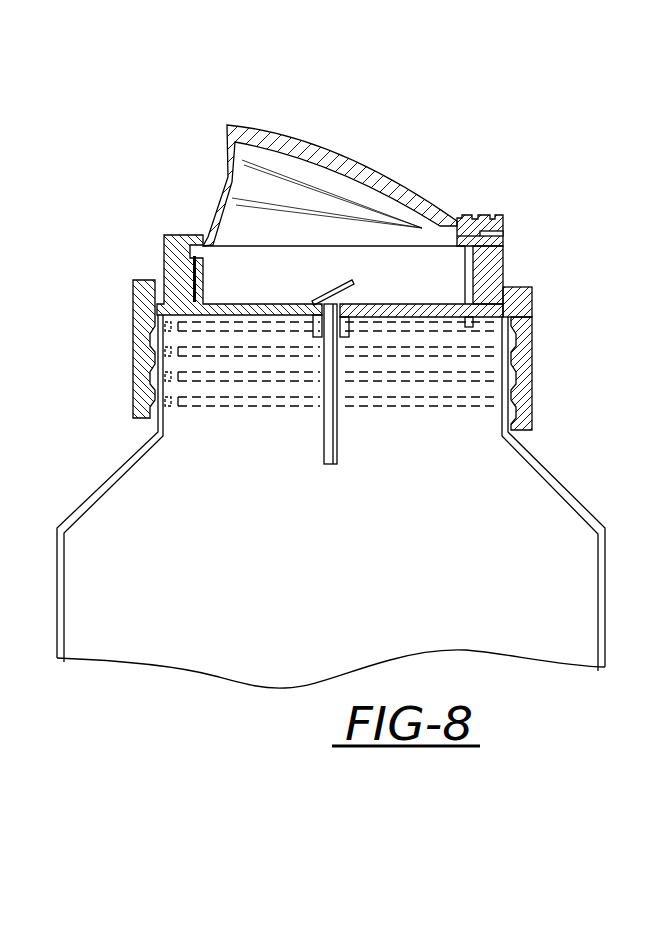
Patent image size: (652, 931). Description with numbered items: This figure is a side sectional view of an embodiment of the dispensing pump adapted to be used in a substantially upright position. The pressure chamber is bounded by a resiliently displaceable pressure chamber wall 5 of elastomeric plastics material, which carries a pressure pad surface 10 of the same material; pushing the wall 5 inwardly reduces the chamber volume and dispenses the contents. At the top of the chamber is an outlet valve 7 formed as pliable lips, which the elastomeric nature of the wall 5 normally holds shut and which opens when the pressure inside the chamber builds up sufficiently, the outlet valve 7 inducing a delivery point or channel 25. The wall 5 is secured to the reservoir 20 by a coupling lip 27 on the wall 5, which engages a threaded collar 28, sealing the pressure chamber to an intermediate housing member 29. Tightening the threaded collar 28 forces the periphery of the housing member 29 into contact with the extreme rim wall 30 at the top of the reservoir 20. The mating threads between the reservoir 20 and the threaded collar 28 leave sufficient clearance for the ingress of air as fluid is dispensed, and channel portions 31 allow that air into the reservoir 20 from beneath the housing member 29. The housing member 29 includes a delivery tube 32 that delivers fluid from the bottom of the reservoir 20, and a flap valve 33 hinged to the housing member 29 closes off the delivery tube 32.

The pressure chamber wall 5 is at (252, 112).
The pressure pad surface 10 is at (344, 138).
The outlet valve 7 is at (465, 203).
The delivery point or channel 25 is at (517, 219).
The coupling lip 27 is at (521, 283).
The extreme rim wall 30 is at (518, 311).
The threaded collar 28 is at (546, 402).
The reservoir 20 is at (566, 524).
The delivery tube 32 is at (353, 447).
The channel portions 31 is at (176, 429).
The intermediate housing member 29 is at (252, 293).
The flap valve 33 is at (315, 282).